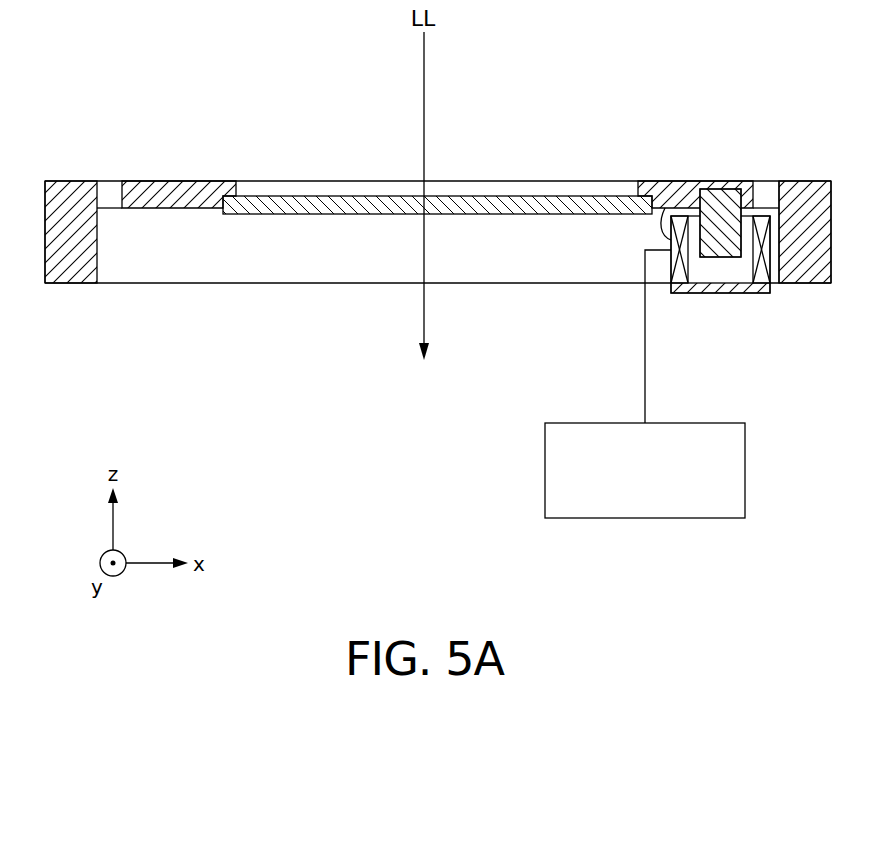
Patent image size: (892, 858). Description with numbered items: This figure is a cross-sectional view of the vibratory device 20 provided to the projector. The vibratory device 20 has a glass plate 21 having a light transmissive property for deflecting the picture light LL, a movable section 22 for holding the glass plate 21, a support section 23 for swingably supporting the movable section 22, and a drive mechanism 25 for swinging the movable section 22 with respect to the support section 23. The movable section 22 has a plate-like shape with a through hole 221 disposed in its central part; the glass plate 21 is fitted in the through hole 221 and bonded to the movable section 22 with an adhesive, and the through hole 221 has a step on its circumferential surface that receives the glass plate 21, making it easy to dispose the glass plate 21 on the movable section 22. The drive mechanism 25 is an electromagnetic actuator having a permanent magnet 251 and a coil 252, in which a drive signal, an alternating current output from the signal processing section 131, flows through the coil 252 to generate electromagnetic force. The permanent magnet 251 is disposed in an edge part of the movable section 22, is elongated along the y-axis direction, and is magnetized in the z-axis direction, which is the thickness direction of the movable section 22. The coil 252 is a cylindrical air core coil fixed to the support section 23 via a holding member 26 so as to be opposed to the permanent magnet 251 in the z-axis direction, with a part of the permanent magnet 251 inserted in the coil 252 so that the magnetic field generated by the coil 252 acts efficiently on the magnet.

The vibratory device 20 is at (134, 140).
The glass plate 21 is at (437, 221).
The movable section 22 is at (173, 195).
The support section 23 is at (64, 285).
The drive mechanism 25 is at (736, 218).
The holding member 26 is at (720, 293).
The signal processing section 131 is at (650, 520).
The through hole 221 is at (300, 200).
The permanent magnet 251 is at (722, 200).
The coil 252 is at (665, 181).